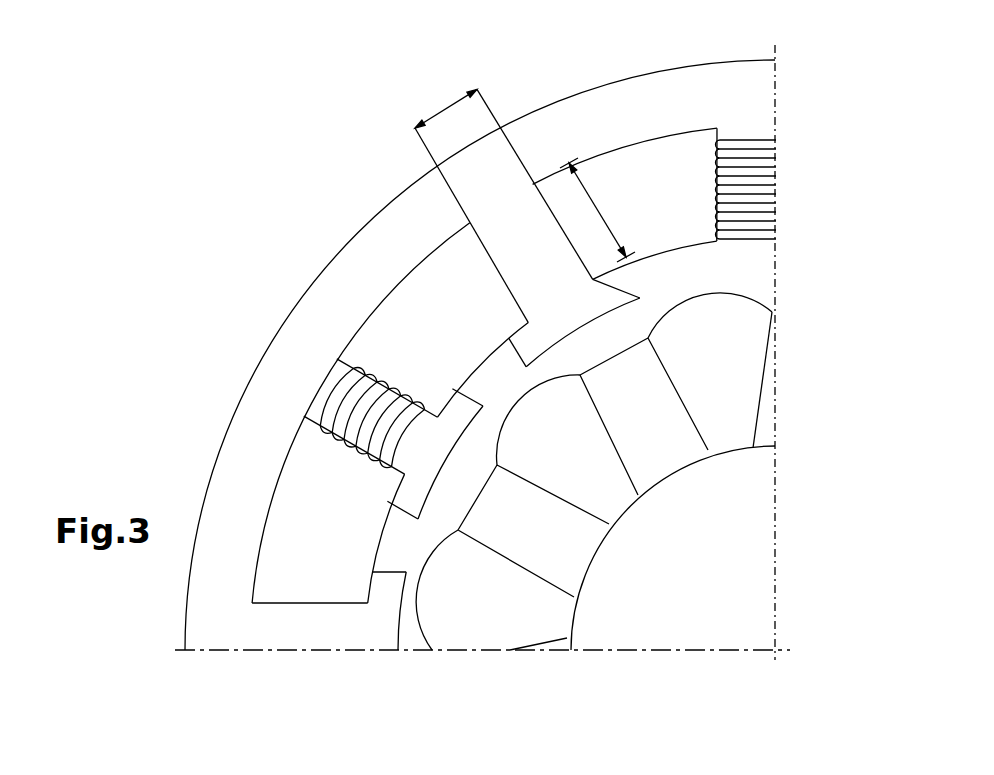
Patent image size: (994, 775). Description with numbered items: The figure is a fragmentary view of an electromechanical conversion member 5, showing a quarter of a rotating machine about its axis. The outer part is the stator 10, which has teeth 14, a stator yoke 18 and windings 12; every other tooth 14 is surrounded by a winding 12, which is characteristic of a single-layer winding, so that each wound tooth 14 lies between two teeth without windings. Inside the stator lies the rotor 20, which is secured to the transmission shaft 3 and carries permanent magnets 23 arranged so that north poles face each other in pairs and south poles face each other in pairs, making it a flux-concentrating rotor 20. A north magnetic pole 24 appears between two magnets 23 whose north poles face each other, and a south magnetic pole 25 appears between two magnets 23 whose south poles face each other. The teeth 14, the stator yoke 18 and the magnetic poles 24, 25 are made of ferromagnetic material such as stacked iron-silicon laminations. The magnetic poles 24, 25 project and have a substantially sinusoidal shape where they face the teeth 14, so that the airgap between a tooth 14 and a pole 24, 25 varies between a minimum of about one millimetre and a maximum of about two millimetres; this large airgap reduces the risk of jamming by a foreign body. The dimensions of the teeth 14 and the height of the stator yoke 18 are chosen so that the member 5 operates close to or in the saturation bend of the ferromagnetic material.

The transmission shaft 3 is at (750, 567).
The electromechanical conversion member 5 is at (318, 172).
The stator 10 is at (797, 139).
The winding 12 is at (750, 140).
The tooth 14 is at (556, 215).
The stator yoke 18 is at (333, 267).
The rotor 20 is at (790, 473).
The permanent magnet 23 is at (563, 643).
The north magnetic pole 24 is at (567, 462).
The south magnetic pole 25 is at (463, 630).